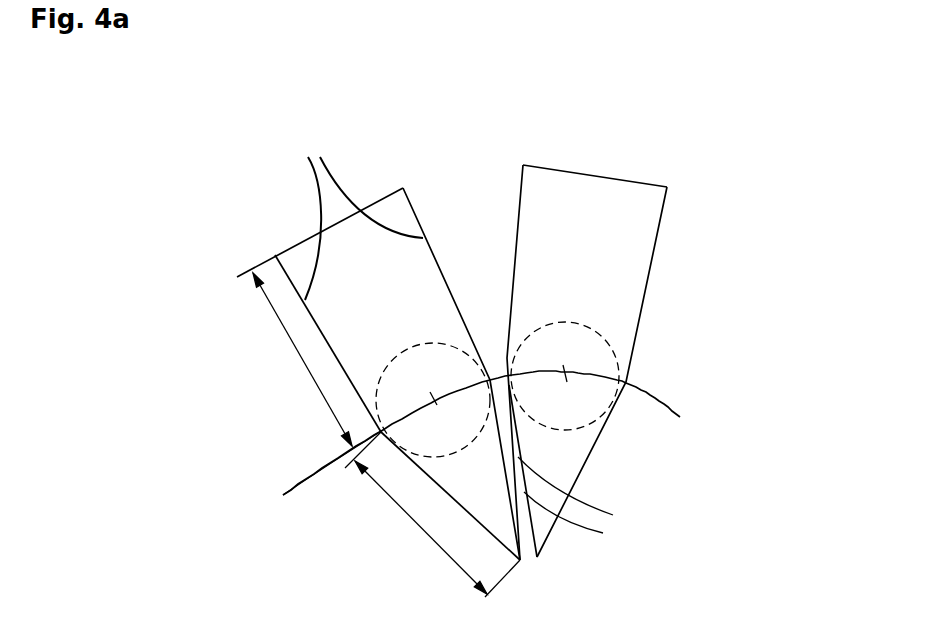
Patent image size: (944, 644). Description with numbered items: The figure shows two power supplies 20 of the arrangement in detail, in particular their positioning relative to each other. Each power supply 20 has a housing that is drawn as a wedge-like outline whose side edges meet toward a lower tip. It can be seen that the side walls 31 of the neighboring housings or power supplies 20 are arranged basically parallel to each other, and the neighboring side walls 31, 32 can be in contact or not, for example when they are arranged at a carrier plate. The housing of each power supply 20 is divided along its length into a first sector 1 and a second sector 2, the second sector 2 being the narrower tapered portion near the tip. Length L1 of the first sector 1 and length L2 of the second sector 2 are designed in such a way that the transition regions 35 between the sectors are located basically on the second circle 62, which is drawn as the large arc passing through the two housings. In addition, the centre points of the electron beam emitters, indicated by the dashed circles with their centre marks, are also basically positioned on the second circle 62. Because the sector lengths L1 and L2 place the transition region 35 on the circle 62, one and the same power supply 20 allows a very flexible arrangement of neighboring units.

The first sector 1 is at (710, 267).
The second sector 2 is at (650, 473).
The power supply 20 is at (397, 203).
The first pair of side walls 31 is at (361, 203).
The second pair of side walls 32 is at (580, 504).
The transition region 35 is at (297, 480).
The second circle 62 is at (653, 397).
The length of sector 1 L1 is at (288, 343).
The length of sector 2 L2 is at (405, 513).